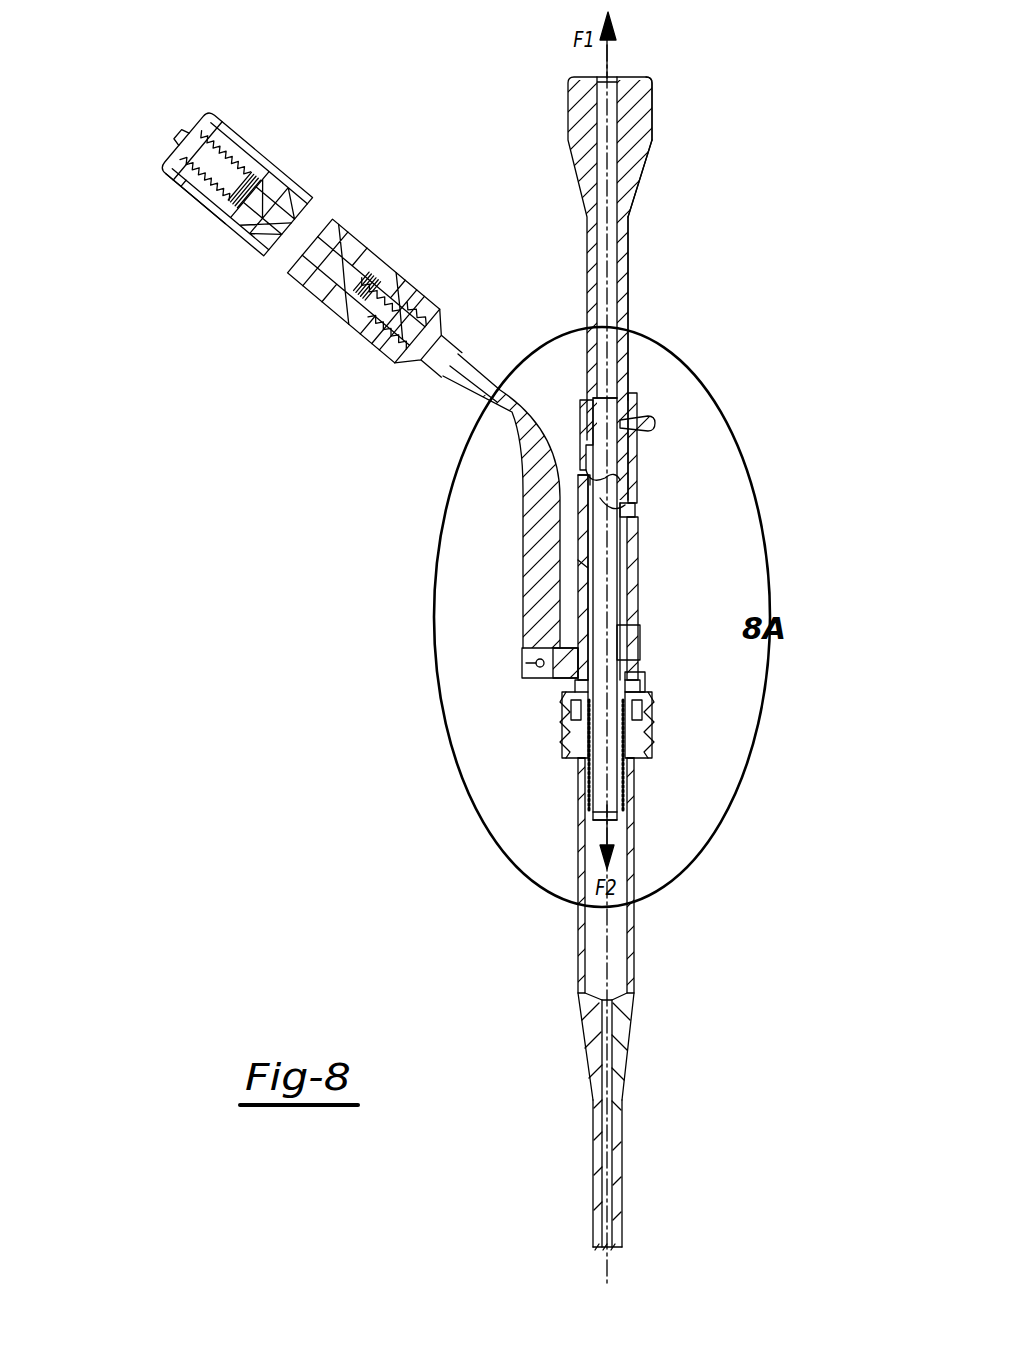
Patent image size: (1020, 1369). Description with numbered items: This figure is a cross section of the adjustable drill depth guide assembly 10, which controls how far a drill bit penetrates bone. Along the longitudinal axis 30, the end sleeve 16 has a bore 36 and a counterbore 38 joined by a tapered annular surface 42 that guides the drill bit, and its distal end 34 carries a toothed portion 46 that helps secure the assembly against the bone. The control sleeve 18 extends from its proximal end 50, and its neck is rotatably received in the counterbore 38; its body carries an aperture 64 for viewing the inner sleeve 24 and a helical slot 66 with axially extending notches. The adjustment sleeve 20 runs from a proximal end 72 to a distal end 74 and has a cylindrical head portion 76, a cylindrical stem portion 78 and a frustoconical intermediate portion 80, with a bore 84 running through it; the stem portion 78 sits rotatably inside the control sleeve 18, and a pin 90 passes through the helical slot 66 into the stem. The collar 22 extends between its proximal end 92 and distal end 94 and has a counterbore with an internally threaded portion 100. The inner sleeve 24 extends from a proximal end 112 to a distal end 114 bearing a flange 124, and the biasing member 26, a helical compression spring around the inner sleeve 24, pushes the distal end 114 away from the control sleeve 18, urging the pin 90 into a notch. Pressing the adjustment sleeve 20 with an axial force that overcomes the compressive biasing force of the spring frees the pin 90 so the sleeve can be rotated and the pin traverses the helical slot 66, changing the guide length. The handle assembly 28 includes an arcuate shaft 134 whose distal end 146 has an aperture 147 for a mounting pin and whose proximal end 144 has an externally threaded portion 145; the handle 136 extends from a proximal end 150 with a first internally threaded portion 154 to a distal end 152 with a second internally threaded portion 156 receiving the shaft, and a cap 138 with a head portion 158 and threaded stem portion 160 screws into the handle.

The adjustable drill depth guide assembly 10 is at (468, 136).
The end sleeve 16 is at (570, 1033).
The control sleeve 18 is at (648, 563).
The adjustment sleeve 20 is at (566, 180).
The collar 22 is at (668, 722).
The inner sleeve 24 is at (636, 597).
The biasing member 26 is at (626, 797).
The handle assembly 28 is at (356, 378).
The longitudinal axis 30 is at (607, 1272).
The distal end 34 is at (618, 1228).
The bore 36 is at (604, 1065).
The counterbore 38 is at (617, 958).
The annular surface 42 is at (594, 991).
The toothed portion 46 is at (597, 1249).
The proximal end 50 is at (633, 390).
The aperture 64 is at (634, 630).
The helical slot 66 is at (636, 510).
The proximal end 72 is at (622, 78).
The distal end 74 is at (588, 452).
The head portion 76 is at (652, 107).
The stem portion 78 is at (626, 241).
The intermediate portion 80 is at (641, 173).
The bore 84 is at (600, 293).
The pin 90 is at (664, 420).
The proximal end 92 is at (634, 672).
The distal end 94 is at (573, 757).
The internally threaded portion 100 is at (645, 753).
The proximal end 112 is at (593, 386).
The distal end 114 is at (612, 832).
The flange 124 is at (586, 814).
The shaft 134 is at (523, 541).
The handle 136 is at (303, 292).
The cap 138 is at (193, 138).
The proximal end 144 is at (353, 283).
The externally threaded portion 145 is at (380, 335).
The distal end 146 is at (537, 680).
The aperture 147 is at (536, 662).
The proximal end 150 is at (190, 172).
The distal end 152 is at (412, 395).
The first internally threaded portion 154 is at (233, 140).
The second internally threaded portion 156 is at (416, 310).
The head portion 158 is at (167, 157).
The stem portion 160 is at (232, 168).